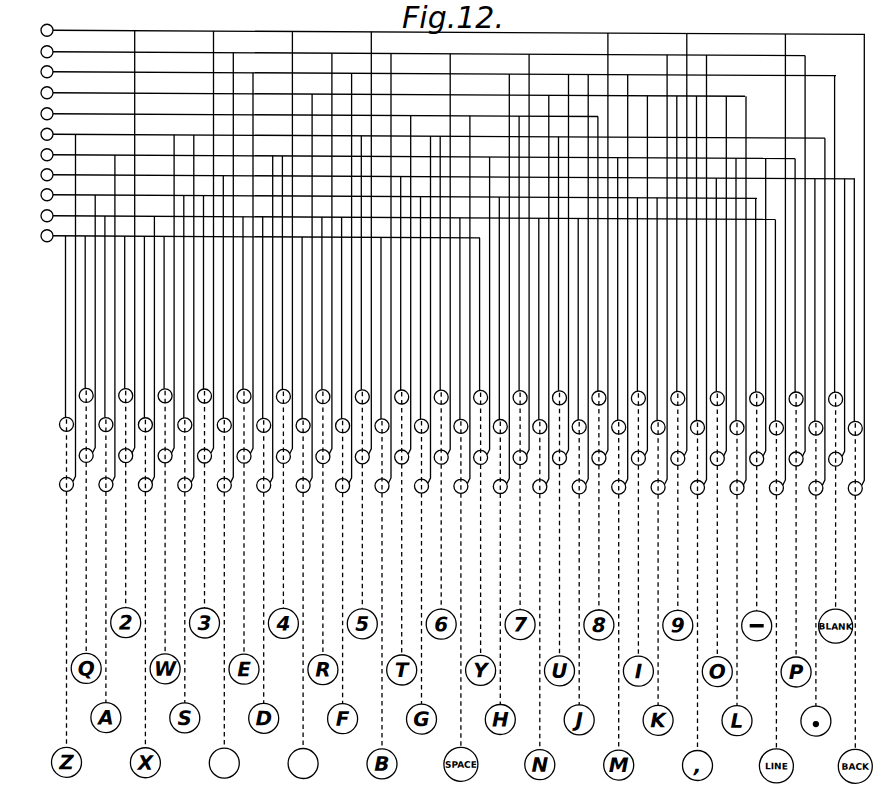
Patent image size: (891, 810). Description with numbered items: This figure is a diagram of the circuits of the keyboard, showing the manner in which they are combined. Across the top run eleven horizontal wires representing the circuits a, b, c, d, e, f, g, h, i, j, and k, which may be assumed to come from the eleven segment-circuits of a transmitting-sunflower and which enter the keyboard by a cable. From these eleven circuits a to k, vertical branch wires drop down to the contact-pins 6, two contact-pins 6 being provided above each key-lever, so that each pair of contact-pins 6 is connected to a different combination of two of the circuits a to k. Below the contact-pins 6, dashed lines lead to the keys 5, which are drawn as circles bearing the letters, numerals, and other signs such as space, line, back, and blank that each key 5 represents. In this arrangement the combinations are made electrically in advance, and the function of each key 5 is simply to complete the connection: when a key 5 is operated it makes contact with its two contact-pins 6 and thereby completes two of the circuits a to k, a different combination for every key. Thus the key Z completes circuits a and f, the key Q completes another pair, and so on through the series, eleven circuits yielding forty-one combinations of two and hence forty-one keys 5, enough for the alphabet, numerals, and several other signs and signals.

The key 5 is at (239, 769).
The contact-pin 6 is at (60, 427).
The circuit a is at (250, 237).
The circuit b is at (397, 218).
The circuit c is at (389, 197).
The circuit d is at (437, 177).
The circuit e is at (408, 157).
The circuit f is at (424, 136).
The circuit g is at (309, 116).
The circuit h is at (382, 95).
The circuit i is at (430, 74).
The circuit j is at (413, 54).
The circuit k is at (443, 32).